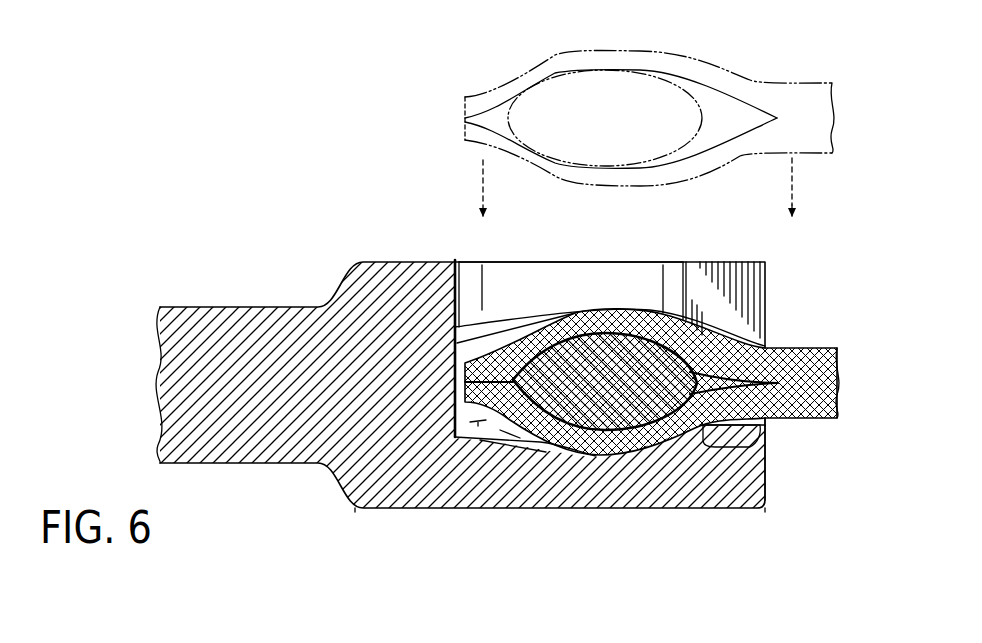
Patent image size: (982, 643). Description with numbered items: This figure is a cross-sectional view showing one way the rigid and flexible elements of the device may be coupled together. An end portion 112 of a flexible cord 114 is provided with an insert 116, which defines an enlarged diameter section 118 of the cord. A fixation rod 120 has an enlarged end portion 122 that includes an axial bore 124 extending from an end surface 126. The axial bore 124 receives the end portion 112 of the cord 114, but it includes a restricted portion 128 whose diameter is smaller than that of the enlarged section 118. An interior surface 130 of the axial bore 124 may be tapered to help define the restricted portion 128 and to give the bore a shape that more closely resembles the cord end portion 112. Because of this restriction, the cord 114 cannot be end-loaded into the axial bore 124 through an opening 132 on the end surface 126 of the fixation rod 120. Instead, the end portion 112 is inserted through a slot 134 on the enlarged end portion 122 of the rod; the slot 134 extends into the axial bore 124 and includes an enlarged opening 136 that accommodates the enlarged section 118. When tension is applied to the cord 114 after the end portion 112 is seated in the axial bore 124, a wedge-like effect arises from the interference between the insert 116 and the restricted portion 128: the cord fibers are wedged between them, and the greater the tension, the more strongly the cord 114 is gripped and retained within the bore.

The end portion 112 is at (470, 96).
The flexible cord 114 is at (801, 80).
The insert 116 is at (514, 106).
The enlarged diameter section 118 is at (609, 448).
The fixation rod 120 is at (300, 283).
The enlarged end portion 122 is at (765, 518).
The axial bore 124 is at (505, 432).
The end surface 126 is at (770, 492).
The restricted portion 128 is at (722, 452).
The interior surface 130 is at (478, 428).
The opening 132 is at (770, 421).
The slot 134 is at (765, 255).
The enlarged opening 136 is at (600, 297).